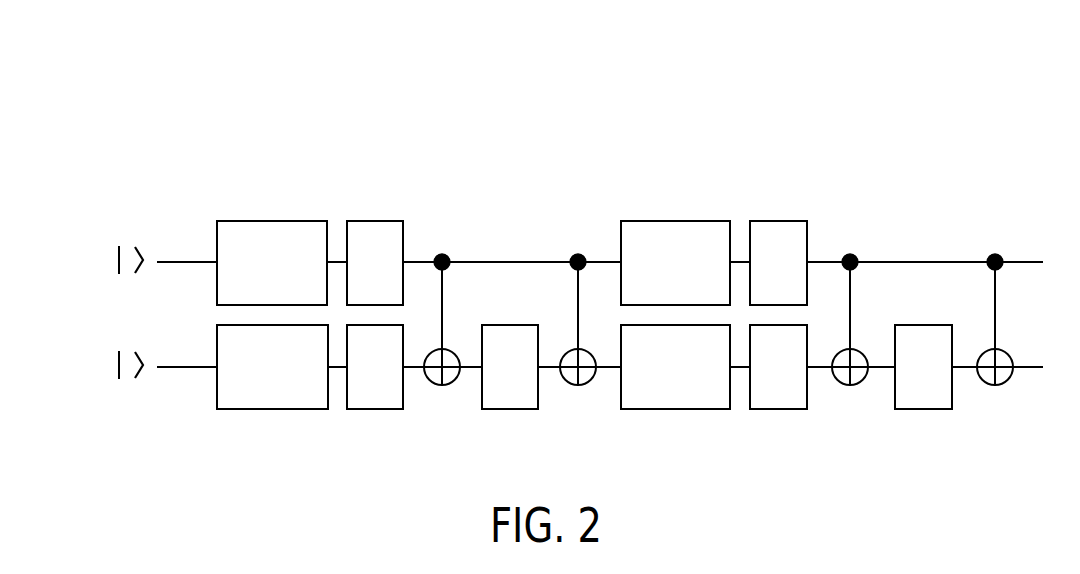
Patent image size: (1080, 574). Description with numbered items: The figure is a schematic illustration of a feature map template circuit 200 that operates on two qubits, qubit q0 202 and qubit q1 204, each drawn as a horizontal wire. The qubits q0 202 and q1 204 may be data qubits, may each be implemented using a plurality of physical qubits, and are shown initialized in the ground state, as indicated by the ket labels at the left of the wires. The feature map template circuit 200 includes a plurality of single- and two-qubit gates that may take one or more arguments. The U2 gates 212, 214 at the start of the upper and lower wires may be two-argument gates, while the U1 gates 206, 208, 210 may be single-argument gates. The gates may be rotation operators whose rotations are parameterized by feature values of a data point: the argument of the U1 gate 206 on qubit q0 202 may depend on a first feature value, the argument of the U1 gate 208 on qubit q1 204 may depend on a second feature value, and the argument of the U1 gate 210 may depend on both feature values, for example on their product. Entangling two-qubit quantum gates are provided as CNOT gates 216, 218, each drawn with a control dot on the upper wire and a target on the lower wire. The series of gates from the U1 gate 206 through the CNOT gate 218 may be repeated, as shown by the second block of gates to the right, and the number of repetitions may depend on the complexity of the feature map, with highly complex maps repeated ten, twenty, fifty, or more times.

The feature map template circuit 200 is at (112, 96).
The qubit q0 202 is at (78, 250).
The qubit q1 204 is at (78, 378).
The U1 gate 206 is at (378, 221).
The U1 gate 208 is at (375, 410).
The U1 gate 210 is at (510, 410).
The U2 gate 212 is at (273, 221).
The U2 gate 214 is at (270, 410).
The CNOT gate 216 is at (443, 253).
The CNOT gate 218 is at (579, 253).